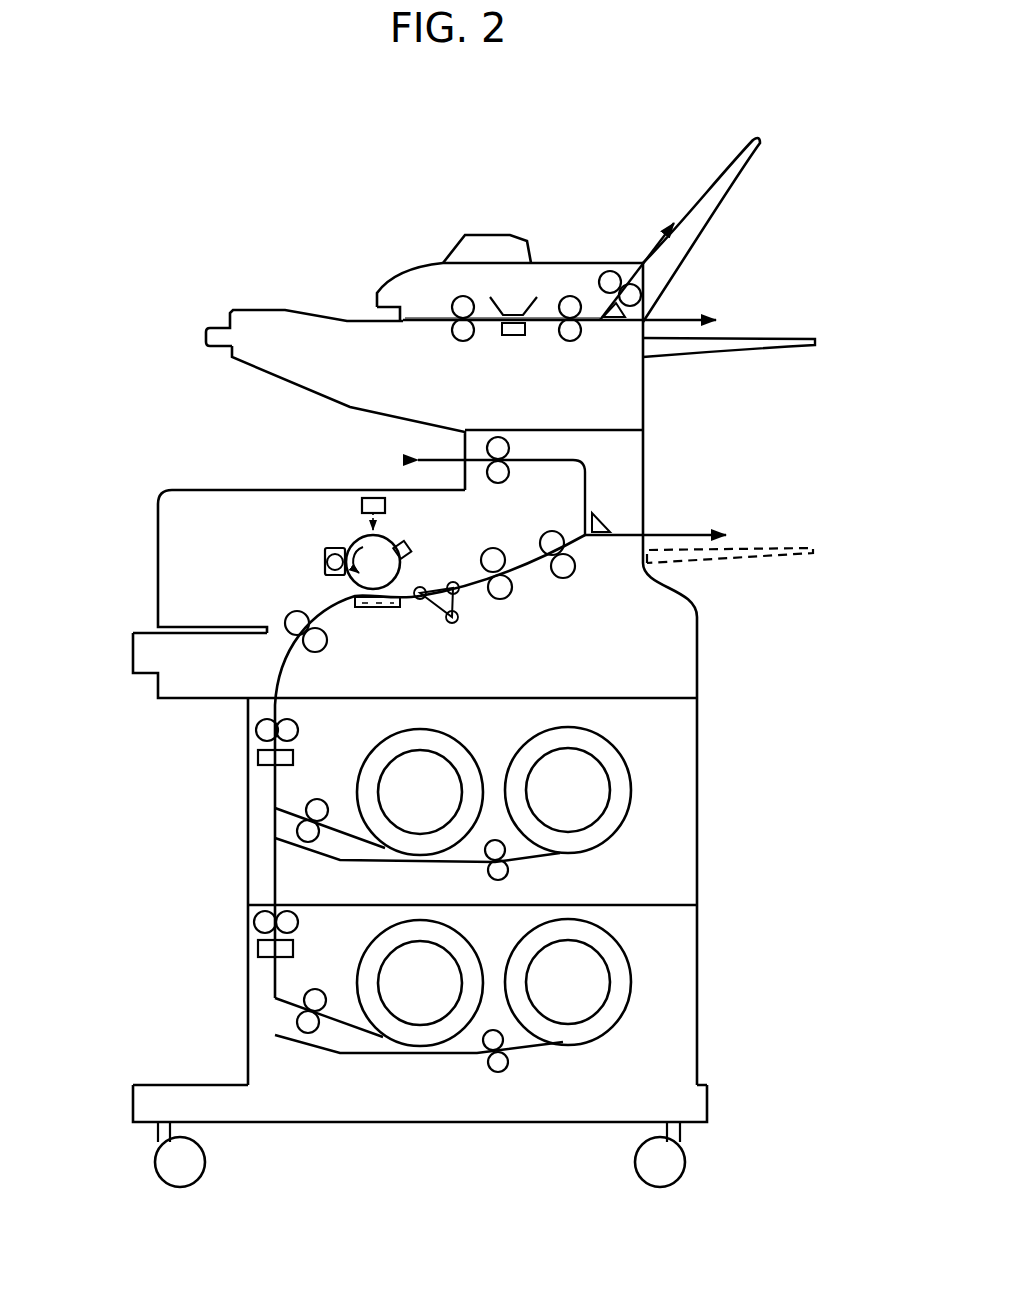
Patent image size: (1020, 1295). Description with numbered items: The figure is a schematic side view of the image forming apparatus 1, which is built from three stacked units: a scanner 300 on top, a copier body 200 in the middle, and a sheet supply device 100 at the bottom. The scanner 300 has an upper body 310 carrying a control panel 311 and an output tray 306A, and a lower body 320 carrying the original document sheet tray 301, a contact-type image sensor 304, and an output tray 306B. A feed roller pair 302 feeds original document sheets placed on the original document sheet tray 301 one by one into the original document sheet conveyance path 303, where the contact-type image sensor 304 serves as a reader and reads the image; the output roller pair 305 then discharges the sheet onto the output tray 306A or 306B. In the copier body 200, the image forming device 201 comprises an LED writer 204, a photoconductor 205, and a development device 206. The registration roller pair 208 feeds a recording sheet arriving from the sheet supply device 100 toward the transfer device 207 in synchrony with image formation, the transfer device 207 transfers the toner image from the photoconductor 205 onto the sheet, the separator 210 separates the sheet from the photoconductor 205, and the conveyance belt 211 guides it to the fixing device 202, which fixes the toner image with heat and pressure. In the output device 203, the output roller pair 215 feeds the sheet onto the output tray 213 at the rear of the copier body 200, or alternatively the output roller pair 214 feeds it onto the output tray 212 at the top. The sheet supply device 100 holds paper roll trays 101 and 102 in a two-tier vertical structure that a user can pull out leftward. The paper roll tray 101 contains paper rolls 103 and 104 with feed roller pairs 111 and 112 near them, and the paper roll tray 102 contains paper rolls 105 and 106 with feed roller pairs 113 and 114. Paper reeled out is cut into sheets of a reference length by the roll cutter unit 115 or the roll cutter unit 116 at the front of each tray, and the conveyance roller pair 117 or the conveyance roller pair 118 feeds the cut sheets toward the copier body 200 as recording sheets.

The image forming apparatus 1 is at (558, 127).
The sheet supply device 100 is at (170, 859).
The paper roll tray 101 is at (712, 767).
The paper roll tray 102 is at (712, 978).
The paper roll 103 is at (453, 745).
The paper roll 104 is at (603, 745).
The paper roll 105 is at (454, 948).
The paper roll 106 is at (604, 946).
The feed roller pair 111 is at (309, 842).
The feed roller pair 112 is at (506, 852).
The feed roller pair 113 is at (309, 1034).
The feed roller pair 114 is at (506, 1043).
The roll cutter unit 115 is at (258, 757).
The roll cutter unit 116 is at (258, 948).
The conveyance roller pair 117 is at (298, 727).
The conveyance roller pair 118 is at (298, 922).
The copier body 200 is at (117, 521).
The image forming device 201 is at (342, 531).
The fixing device 202 is at (512, 589).
The output device 203 is at (631, 475).
The LED writer 204 is at (376, 497).
The photoconductor 205 is at (407, 545).
The development device 206 is at (323, 560).
The transfer device 207 is at (370, 608).
The registration roller pair 208 is at (290, 637).
The separator 210 is at (440, 616).
The conveyance belt 211 is at (470, 598).
The output tray 212 is at (290, 489).
The output tray 213 is at (727, 565).
The output roller pair 214 is at (511, 465).
The output roller pair 215 is at (575, 551).
The scanner 300 is at (154, 261).
The original document sheet tray 301 is at (332, 309).
The feed roller pair 302 is at (452, 311).
The original document sheet conveyance path 303 is at (416, 316).
The contact-type image sensor 304 is at (514, 337).
The output roller pair 305 is at (627, 284).
The output tray 306A is at (728, 176).
The output tray 306B is at (770, 339).
The upper body 310 is at (541, 252).
The control panel 311 is at (476, 236).
The lower body 320 is at (252, 383).